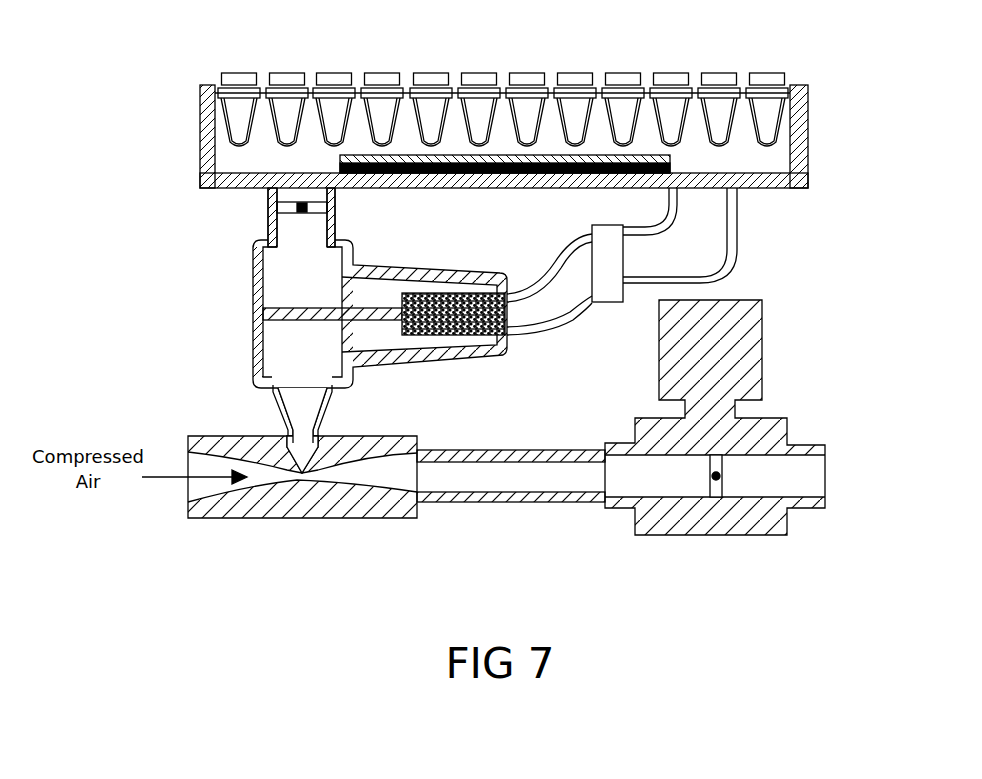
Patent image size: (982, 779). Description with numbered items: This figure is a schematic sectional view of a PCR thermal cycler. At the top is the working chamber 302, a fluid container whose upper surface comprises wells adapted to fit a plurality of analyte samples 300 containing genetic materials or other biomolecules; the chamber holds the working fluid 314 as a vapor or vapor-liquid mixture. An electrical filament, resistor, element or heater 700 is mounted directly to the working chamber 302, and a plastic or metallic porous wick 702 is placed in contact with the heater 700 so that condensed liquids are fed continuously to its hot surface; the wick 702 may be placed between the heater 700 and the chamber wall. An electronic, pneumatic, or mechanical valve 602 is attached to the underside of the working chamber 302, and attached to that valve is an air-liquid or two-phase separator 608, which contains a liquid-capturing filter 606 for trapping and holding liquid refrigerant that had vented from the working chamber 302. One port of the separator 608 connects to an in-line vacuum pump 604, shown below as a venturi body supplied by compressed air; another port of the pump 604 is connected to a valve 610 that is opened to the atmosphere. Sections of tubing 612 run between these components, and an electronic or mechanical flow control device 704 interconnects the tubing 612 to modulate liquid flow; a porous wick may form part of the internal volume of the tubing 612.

The analyte samples 300 is at (334, 108).
The working chamber 302 is at (795, 86).
The working fluid 314 is at (500, 125).
The heater 700 is at (424, 176).
The wick 702 is at (634, 158).
The valve 602 is at (268, 205).
The separator 608 is at (257, 299).
The filter 606 is at (458, 340).
The in-line vacuum pump 604 is at (230, 442).
The flow control device 704 is at (605, 304).
The valve 610 is at (742, 343).
The tubing 612 is at (740, 223).